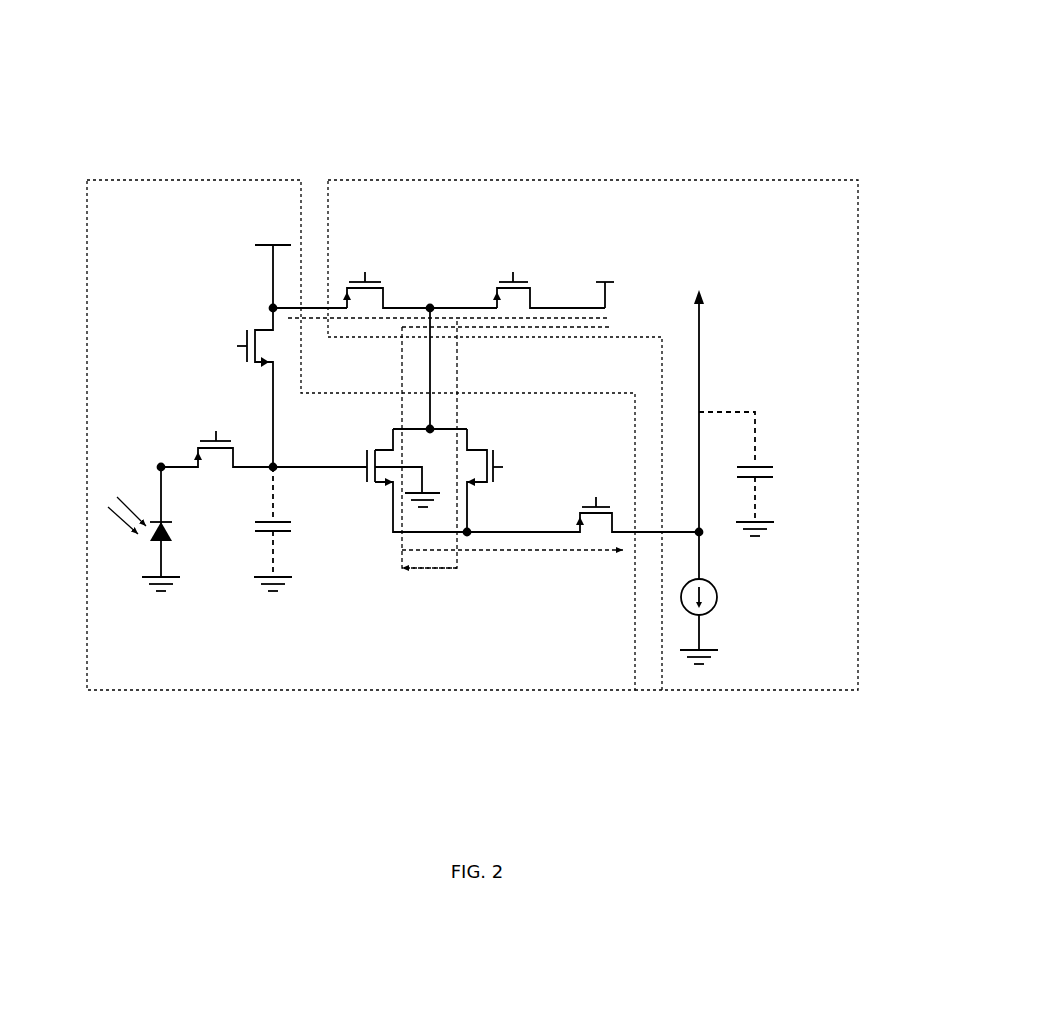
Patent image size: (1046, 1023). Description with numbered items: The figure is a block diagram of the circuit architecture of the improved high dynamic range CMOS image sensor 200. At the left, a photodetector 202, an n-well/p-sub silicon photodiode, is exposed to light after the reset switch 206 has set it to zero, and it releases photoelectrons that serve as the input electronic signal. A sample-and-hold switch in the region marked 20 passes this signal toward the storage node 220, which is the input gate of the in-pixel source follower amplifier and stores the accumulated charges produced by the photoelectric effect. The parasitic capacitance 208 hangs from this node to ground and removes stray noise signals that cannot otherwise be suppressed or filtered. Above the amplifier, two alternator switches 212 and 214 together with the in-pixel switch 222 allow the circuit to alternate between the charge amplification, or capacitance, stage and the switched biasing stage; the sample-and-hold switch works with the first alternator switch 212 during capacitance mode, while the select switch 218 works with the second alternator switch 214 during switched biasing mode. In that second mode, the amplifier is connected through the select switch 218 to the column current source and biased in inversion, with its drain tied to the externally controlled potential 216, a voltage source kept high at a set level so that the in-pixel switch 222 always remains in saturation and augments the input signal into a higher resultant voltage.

The high dynamic range CMOS image sensor 200 is at (832, 122).
The reset switch 206 is at (183, 315).
The sample and hold switch 20 is at (195, 400).
The photodetector 202 is at (115, 533).
The parasitic capacitance 208 is at (215, 557).
The alternator switch S_P1 212 is at (368, 215).
The alternator switch S_P2 214 is at (508, 220).
The externally controlled potential V_PA 216 is at (632, 232).
The storage node 220 is at (262, 480).
The in-pixel switch S_PA 222 is at (508, 495).
The select switch S_SEL 218 is at (597, 537).